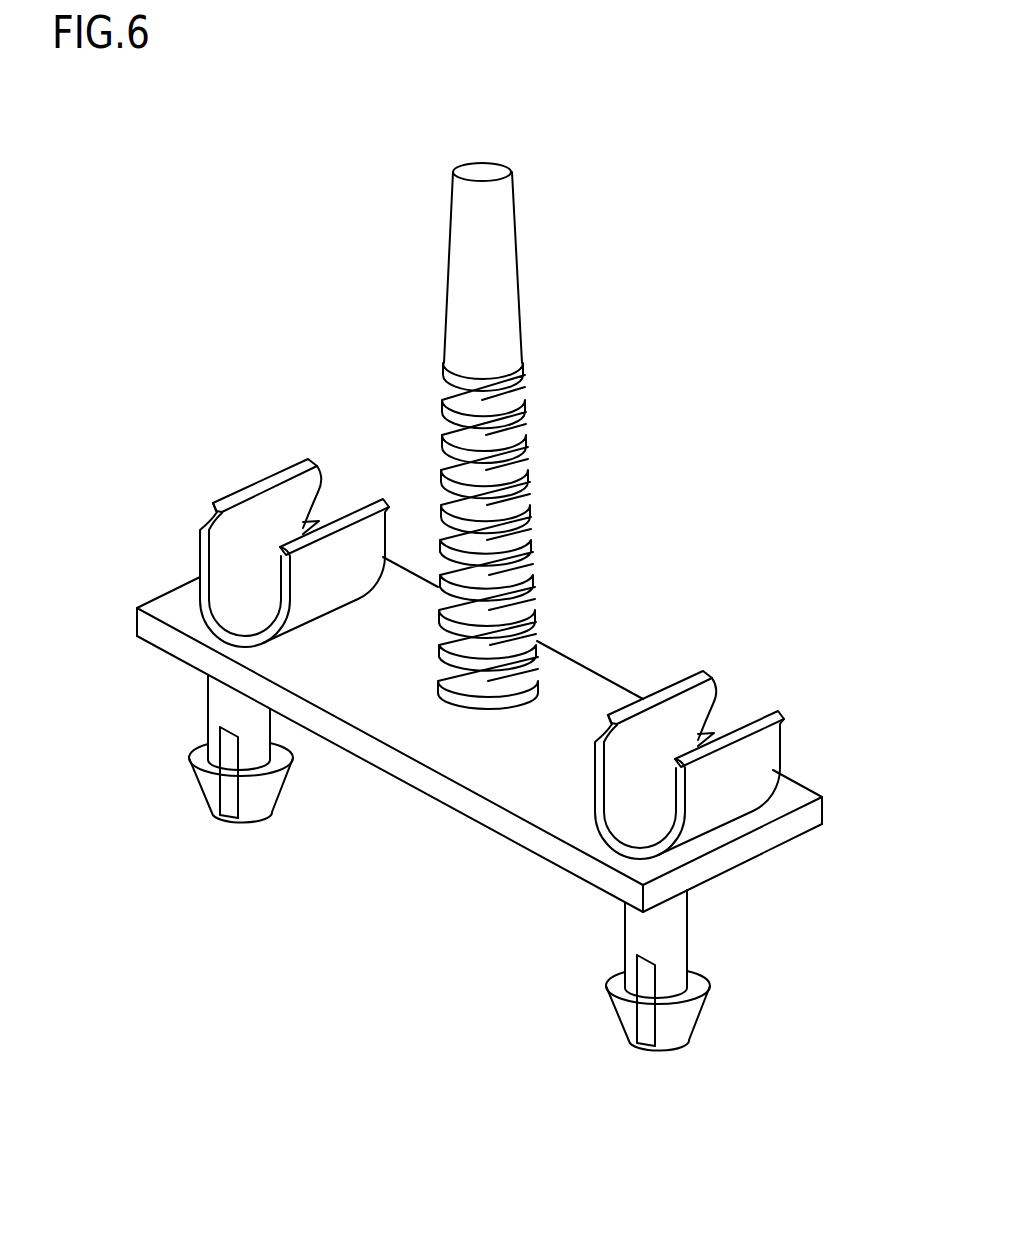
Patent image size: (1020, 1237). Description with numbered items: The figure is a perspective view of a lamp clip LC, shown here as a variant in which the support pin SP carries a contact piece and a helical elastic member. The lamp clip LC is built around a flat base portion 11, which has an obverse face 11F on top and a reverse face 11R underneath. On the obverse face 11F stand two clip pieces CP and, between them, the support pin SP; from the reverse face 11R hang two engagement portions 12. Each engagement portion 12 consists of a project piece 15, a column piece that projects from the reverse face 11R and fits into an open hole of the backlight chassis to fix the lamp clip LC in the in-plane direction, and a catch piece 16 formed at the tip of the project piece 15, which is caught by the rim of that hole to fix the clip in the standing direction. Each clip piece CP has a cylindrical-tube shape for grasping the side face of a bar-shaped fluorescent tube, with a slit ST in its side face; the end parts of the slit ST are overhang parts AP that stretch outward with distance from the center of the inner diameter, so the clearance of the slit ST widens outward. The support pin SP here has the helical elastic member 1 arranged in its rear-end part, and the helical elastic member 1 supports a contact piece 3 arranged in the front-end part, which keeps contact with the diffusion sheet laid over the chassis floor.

The lamp clip LC is at (709, 182).
The support pin SP is at (543, 436).
The contact piece 3 is at (513, 298).
The helical elastic member 1 is at (502, 536).
The clip piece CP is at (514, 638).
The overhang part AP is at (510, 659).
The slit ST is at (338, 473).
The base portion 11 is at (444, 728).
The obverse face 11F is at (185, 597).
The reverse face 11R is at (464, 774).
The engagement portion 12 is at (502, 879).
The project piece 15 is at (260, 717).
The catch piece 16 is at (265, 790).